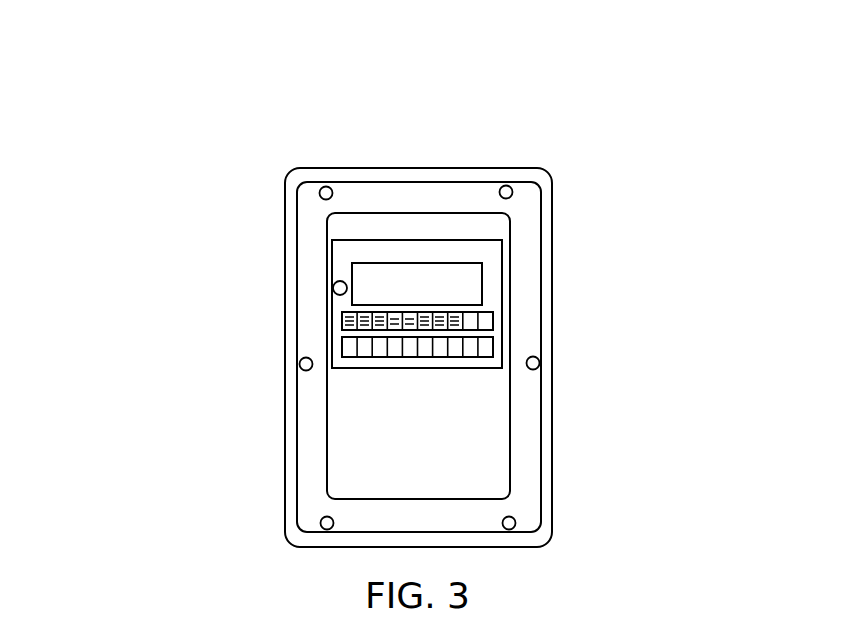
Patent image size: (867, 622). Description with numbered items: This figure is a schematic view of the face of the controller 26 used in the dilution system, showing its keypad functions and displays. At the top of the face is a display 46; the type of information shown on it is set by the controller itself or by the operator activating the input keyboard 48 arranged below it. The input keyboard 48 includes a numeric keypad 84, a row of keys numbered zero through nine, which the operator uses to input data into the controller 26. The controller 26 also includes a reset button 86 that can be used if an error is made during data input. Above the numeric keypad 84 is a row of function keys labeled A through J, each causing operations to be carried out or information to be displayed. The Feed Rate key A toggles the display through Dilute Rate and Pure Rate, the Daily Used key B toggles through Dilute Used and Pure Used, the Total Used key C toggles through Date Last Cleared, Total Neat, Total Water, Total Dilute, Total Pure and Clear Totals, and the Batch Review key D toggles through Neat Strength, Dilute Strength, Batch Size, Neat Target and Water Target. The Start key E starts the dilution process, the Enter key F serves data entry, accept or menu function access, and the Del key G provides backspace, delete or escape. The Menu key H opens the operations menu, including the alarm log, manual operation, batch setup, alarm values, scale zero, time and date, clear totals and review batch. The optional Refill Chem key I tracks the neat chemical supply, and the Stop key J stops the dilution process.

The controller 26 is at (441, 149).
The display 46 is at (474, 278).
The input keyboard 48 is at (495, 335).
The numeric keypad 84 is at (342, 353).
The reset button 86 is at (347, 312).
The Feed Rate function key A is at (346, 318).
The Daily Used function key B is at (348, 314).
The Total Used function key C is at (377, 312).
The Batch Review function key D is at (395, 312).
The Start function key E is at (417, 312).
The Enter function key F is at (465, 320).
The Del function key G is at (477, 330).
The Menu function key H is at (457, 330).
The Refill Chem function key I is at (441, 330).
The Stop function key J is at (421, 330).